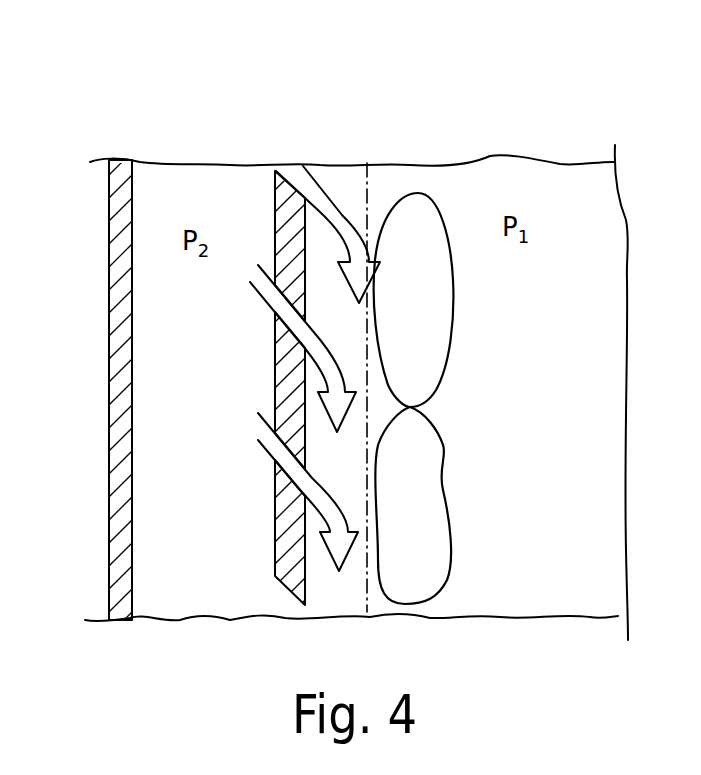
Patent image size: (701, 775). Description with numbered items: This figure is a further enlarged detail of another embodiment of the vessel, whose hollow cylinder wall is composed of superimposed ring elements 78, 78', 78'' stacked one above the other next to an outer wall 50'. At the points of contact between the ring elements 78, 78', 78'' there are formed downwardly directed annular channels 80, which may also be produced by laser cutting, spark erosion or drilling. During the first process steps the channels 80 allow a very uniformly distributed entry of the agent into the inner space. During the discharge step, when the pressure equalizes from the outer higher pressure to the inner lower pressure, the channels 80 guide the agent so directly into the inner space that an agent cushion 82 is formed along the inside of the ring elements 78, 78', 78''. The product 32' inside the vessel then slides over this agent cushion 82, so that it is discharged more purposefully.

The wall 50' is at (90, 393).
The annular channels 80 is at (278, 308).
The ring element 78 is at (314, 182).
The ring element 78' is at (281, 348).
The ring element 78'' is at (279, 492).
The agent cushion 82 is at (348, 183).
The product 32' is at (460, 398).